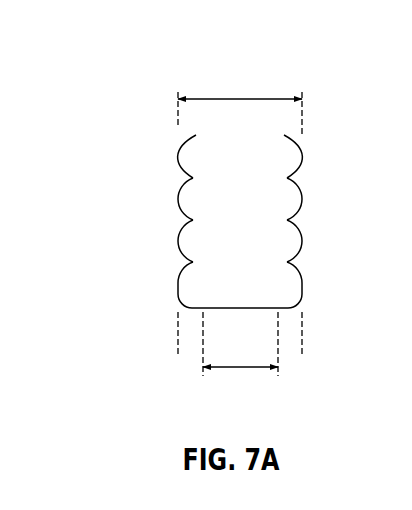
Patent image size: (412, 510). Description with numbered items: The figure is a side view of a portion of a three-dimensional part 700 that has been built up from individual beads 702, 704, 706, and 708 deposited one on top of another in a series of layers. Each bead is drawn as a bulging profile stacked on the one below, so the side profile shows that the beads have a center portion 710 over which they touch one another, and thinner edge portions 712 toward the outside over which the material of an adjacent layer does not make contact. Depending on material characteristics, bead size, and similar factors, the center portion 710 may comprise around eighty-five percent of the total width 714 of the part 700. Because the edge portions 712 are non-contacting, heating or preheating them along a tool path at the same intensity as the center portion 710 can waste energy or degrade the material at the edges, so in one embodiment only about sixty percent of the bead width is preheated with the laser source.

The part 700 is at (243, 172).
The bead 702 is at (302, 290).
The bead 704 is at (302, 243).
The bead 706 is at (302, 198).
The bead 708 is at (302, 155).
The center portion 710 is at (240, 368).
The edge portions 712 is at (178, 351).
The total width 714 is at (241, 98).